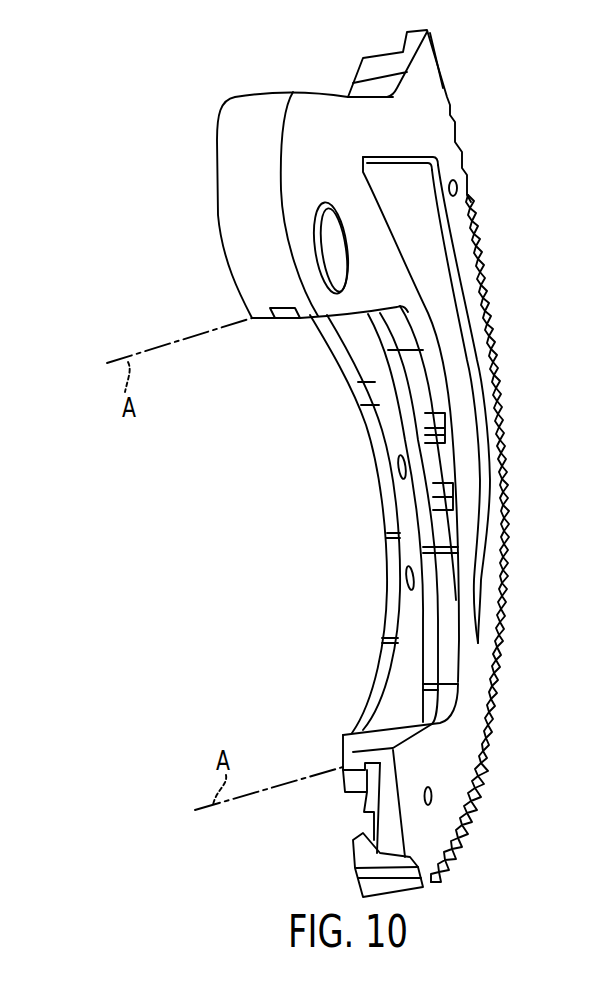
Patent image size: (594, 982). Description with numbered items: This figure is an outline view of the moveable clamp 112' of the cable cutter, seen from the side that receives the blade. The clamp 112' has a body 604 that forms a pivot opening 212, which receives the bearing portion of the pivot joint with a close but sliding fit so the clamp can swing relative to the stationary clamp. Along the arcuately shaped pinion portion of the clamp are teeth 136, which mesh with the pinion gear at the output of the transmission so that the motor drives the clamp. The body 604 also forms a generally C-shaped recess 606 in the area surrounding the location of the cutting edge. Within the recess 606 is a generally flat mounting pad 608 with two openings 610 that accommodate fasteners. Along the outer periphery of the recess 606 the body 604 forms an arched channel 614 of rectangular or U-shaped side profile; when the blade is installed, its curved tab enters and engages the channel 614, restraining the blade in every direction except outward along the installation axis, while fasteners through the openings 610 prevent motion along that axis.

The moveable clamp 112' is at (344, 173).
The pivot opening 212 is at (328, 245).
The body 604 is at (483, 707).
The teeth 136 is at (450, 873).
The recess 606 is at (305, 645).
The mounting pad 608 is at (376, 364).
The openings 610 is at (403, 480).
The arched channel 614 is at (425, 392).